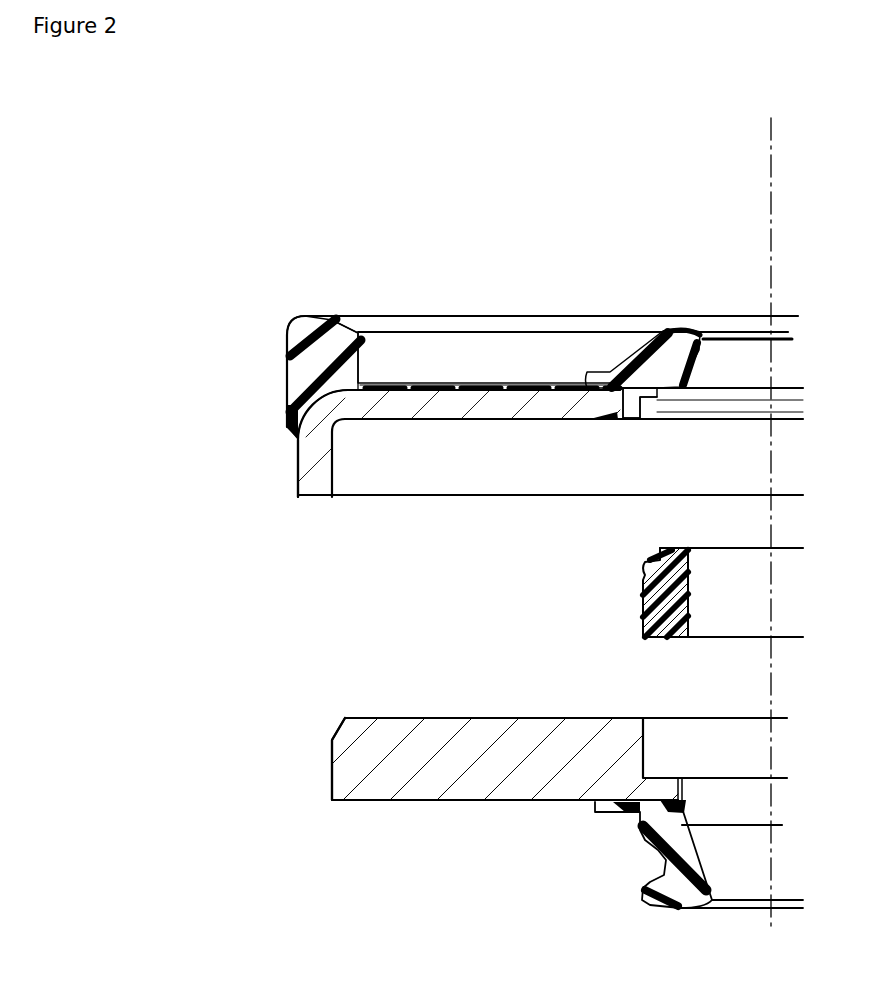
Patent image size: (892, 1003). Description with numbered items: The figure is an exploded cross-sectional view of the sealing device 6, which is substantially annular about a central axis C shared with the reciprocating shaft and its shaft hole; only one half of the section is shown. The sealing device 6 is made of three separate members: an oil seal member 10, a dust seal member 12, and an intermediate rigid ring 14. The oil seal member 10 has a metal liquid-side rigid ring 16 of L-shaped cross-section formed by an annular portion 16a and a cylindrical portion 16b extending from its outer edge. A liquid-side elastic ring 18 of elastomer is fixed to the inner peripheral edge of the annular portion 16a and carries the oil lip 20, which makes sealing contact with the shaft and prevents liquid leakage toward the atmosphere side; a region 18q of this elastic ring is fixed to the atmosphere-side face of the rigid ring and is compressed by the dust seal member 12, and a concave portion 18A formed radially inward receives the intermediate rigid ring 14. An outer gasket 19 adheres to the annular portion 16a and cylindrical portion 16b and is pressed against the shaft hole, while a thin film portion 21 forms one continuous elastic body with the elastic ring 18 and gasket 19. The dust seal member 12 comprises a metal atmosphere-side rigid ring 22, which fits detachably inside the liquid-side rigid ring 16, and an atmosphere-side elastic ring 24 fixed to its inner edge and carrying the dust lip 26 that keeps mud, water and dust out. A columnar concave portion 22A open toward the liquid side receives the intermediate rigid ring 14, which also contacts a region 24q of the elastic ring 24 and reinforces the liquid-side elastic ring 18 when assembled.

The sealing device 6 is at (260, 613).
The oil seal member 10 is at (286, 340).
The dust seal member 12 is at (373, 800).
The intermediate rigid ring 14 is at (688, 590).
The liquid-side rigid ring 16 is at (298, 425).
The annular portion 16a is at (440, 405).
The cylindrical portion 16b is at (298, 466).
The liquid-side elastic ring 18 is at (605, 375).
The concave portion 18A is at (655, 420).
The region 18q is at (612, 420).
The outer gasket 19 is at (287, 372).
The oil lip 20 is at (700, 352).
The thin film portion 21 is at (405, 385).
The atmosphere-side rigid ring 22 is at (505, 802).
The concave portion 22A is at (643, 730).
The atmosphere-side elastic ring 24 is at (655, 907).
The region 24q is at (682, 785).
The dust lip 26 is at (706, 882).
The central axis C is at (771, 690).